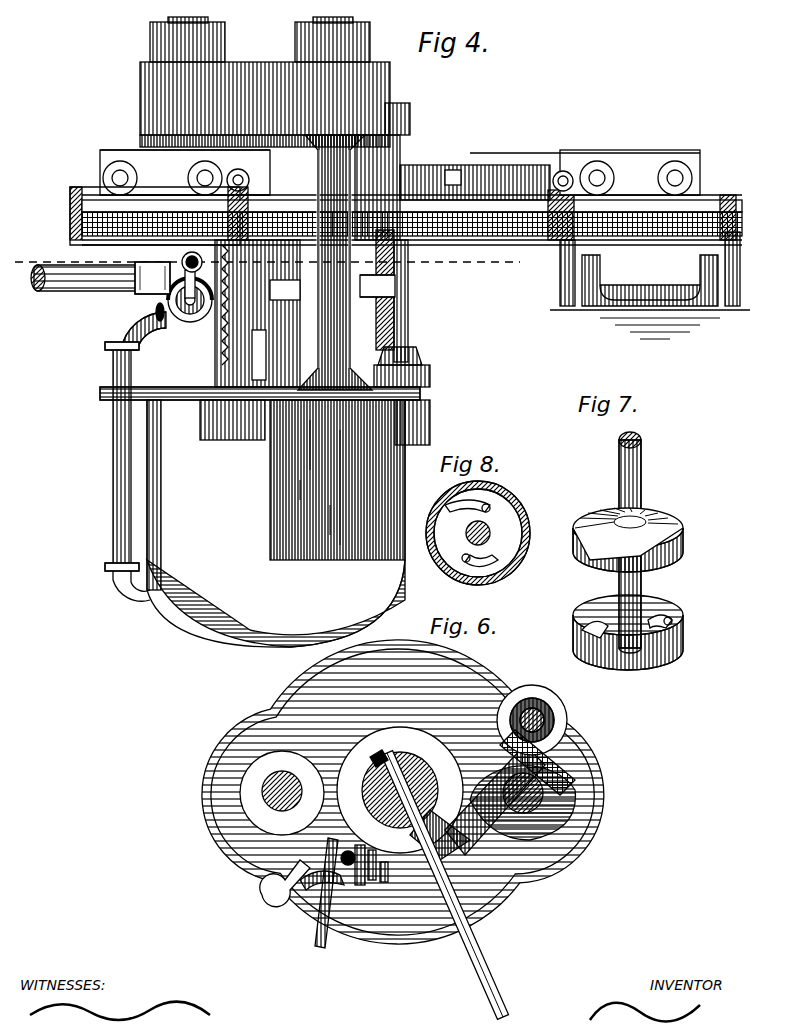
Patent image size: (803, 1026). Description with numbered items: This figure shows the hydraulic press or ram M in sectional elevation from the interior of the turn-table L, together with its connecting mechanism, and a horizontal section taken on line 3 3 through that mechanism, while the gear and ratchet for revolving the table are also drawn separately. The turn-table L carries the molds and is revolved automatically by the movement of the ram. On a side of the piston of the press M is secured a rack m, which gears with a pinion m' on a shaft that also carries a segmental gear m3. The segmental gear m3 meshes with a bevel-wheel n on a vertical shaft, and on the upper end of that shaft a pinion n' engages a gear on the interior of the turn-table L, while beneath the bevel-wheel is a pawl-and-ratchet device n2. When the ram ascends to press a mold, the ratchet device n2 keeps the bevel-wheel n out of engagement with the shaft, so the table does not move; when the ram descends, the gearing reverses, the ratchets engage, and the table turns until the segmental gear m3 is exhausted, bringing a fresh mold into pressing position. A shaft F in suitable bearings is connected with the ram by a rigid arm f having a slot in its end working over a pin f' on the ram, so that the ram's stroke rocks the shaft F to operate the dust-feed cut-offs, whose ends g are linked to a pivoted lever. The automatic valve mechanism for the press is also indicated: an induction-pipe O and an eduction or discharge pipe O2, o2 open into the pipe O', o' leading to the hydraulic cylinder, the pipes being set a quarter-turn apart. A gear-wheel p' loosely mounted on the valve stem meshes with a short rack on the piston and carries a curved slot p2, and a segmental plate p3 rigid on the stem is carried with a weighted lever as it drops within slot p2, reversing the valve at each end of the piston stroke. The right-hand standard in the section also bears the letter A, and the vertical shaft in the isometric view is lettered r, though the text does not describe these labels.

In FIG. 4, the section line 3 3 is at (261, 265).
In FIG. 4, the carriage rail A is at (630, 172).
In FIG. 4, the turn-table L is at (84, 190).
In FIG. 4, the hydraulic press or ram M is at (260, 517).
In FIG. 6, the hydraulic press or ram M is at (427, 760).
In FIG. 6, the shaft F is at (445, 970).
In FIG. 6, the rigid arm f is at (292, 793).
In FIG. 4, the pin f' is at (174, 283).
In FIG. 6, the pin f' is at (378, 751).
In FIG. 4, the ends of the slides g is at (562, 268).
In FIG. 4, the rack m is at (257, 313).
In FIG. 6, the rack m is at (495, 800).
In FIG. 4, the pinion m' is at (254, 355).
In FIG. 6, the pinion m' is at (456, 839).
In FIG. 4, the segmental gear m3 is at (410, 262).
In FIG. 6, the segmental gear m3 is at (560, 768).
In FIG. 4, the bevel-wheel n is at (412, 350).
In FIG. 7, the bevel-wheel n is at (631, 532).
In FIG. 6, the bevel-wheel n is at (532, 717).
In FIG. 4, the pinion n' is at (404, 186).
In FIG. 4, the pawl-and-ratchet device n2 is at (432, 380).
In FIG. 8, the pawl-and-ratchet device n2 is at (490, 492).
In FIG. 7, the pawl-and-ratchet device n2 is at (655, 615).
In FIG. 6, the pawl-and-ratchet device n2 is at (565, 722).
In FIG. 4, the induction-pipe O is at (191, 255).
In FIG. 6, the pipe leading to the hydraulic cylinder O' is at (279, 883).
In FIG. 4, the pipe leading to the hydraulic cylinder o' is at (131, 456).
In FIG. 4, the eduction or discharge pipe O2 is at (162, 322).
In FIG. 6, the eduction or discharge pipe o2 is at (310, 940).
In FIG. 6, the gear-wheel p' is at (349, 908).
In FIG. 6, the curved slot p2 is at (370, 885).
In FIG. 6, the segmental plate p3 is at (384, 885).
In FIG. 4, the shaft r is at (412, 282).
In FIG. 7, the shaft r is at (642, 485).